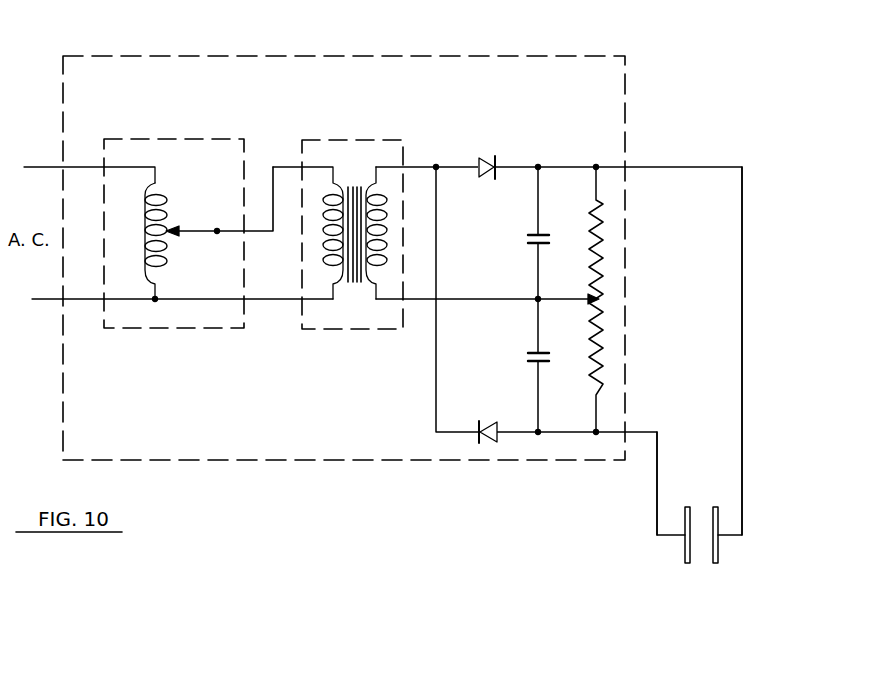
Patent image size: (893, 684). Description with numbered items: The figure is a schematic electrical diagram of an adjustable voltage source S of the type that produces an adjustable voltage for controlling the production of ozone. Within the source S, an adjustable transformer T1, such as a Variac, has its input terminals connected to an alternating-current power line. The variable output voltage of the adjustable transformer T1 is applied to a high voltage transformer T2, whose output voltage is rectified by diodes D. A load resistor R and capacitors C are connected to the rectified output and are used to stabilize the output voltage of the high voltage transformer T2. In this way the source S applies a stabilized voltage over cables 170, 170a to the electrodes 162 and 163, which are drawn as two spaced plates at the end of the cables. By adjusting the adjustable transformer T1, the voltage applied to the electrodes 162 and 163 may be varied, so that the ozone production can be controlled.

The voltage source S is at (201, 47).
The adjustable transformer T1 is at (188, 218).
The high voltage transformer T2 is at (338, 219).
The diodes D is at (487, 299).
The capacitors C is at (526, 299).
The load resistor R is at (584, 299).
The cable 170 is at (744, 468).
The cable 170a is at (656, 479).
The electrode 162 is at (686, 540).
The electrode 163 is at (718, 546).